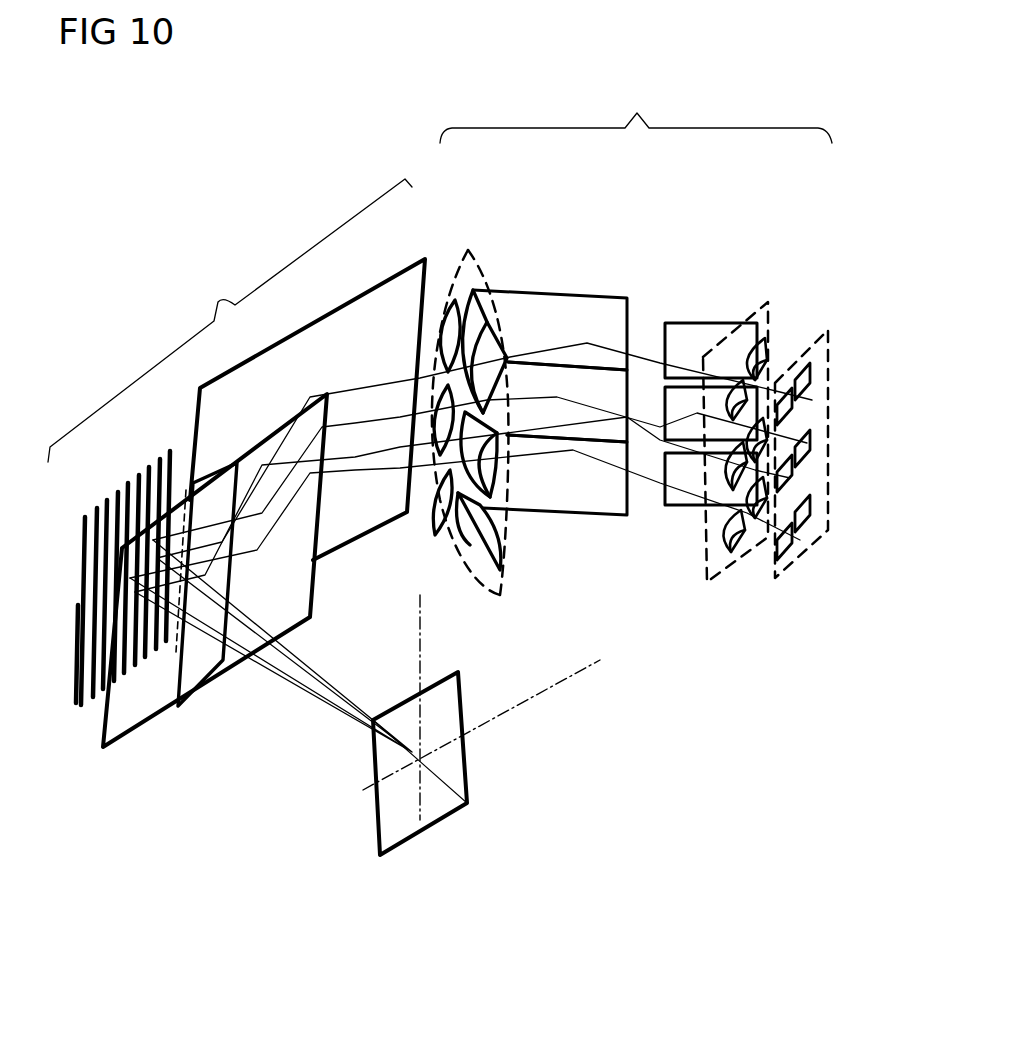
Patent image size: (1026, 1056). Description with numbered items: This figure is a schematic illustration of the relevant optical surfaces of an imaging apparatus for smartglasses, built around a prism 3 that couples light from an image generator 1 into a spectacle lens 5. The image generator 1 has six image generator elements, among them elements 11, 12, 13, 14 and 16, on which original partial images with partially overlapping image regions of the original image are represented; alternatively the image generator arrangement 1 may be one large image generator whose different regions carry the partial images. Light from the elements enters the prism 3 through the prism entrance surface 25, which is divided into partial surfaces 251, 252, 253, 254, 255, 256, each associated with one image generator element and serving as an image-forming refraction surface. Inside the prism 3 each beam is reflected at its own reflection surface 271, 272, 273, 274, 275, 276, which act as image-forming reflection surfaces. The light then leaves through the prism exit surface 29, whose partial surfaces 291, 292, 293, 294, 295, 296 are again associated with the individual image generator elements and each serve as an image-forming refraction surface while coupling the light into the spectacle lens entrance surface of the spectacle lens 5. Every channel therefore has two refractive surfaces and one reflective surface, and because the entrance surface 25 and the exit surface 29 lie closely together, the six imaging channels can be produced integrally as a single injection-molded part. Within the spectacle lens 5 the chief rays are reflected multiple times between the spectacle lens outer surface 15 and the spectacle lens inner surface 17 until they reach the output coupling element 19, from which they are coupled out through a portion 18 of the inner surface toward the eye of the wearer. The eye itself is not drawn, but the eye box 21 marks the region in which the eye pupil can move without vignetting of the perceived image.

The image generator 1 is at (838, 333).
The image generator element 11 is at (840, 372).
The image generator element 12 is at (831, 400).
The image generator element 13 is at (840, 445).
The image generator element 14 is at (831, 473).
The image generator element 16 is at (831, 540).
The prism 3 is at (636, 114).
The spectacle lens 5 is at (230, 320).
The spectacle lens outer surface 15 is at (196, 424).
The spectacle lens inner surface 17 is at (235, 677).
The portion of the spectacle lens inner surface 18 is at (132, 713).
The output coupling element 19 is at (85, 584).
The eye box 21 is at (425, 835).
The prism entrance surface 25 is at (773, 282).
The partial surface of the prism entrance surface 251 is at (798, 334).
The partial surface of the prism entrance surface 252 is at (733, 324).
The partial surface of the prism entrance surface 253 is at (840, 432).
The partial surface of the prism entrance surface 254 is at (704, 534).
The partial surface of the prism entrance surface 255 is at (781, 559).
The partial surface of the prism entrance surface 256 is at (736, 575).
The reflection surface 271 is at (711, 321).
The reflection surface 272 is at (550, 302).
The reflection surface 273 is at (690, 337).
The reflection surface 274 is at (567, 345).
The reflection surface 275 is at (689, 516).
The reflection surface 276 is at (555, 507).
The prism exit surface 29 is at (466, 235).
The partial surface of the prism exit surface 291 is at (492, 306).
The partial surface of the prism exit surface 292 is at (420, 288).
The partial surface of the prism exit surface 293 is at (470, 557).
The partial surface of the prism exit surface 294 is at (389, 355).
The partial surface of the prism exit surface 295 is at (527, 516).
The partial surface of the prism exit surface 296 is at (422, 520).